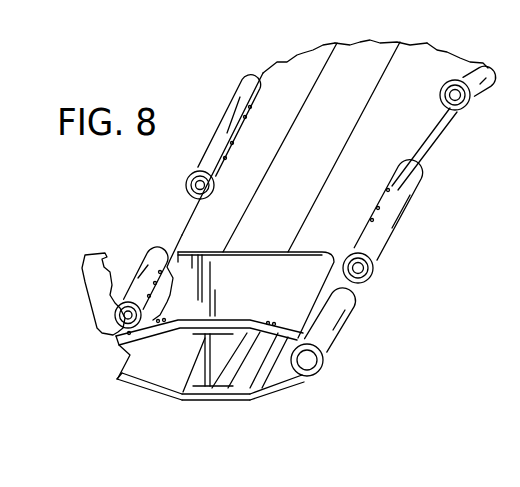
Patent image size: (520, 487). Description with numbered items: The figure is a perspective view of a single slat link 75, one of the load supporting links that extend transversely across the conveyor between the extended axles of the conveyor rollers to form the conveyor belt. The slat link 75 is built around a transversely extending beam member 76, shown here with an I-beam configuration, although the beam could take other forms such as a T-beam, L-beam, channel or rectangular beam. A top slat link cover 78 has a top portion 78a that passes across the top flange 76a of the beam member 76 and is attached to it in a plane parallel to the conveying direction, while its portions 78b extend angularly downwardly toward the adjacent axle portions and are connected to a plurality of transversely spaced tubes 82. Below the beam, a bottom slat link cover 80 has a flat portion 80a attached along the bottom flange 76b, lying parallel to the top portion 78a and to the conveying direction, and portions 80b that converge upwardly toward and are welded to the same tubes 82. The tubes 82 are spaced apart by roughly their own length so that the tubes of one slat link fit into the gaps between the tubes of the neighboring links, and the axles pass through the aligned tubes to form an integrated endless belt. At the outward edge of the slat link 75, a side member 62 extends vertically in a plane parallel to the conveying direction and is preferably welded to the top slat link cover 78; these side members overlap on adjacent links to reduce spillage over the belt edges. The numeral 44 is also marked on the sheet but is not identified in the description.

The top slat link cover 78 is at (320, 163).
The top portion 78a is at (363, 62).
The portions of the top slat link cover 78b is at (290, 72).
The tubes 82 is at (218, 136).
The side members 62 is at (262, 263).
The slat link 75 is at (410, 261).
The transversely extending beam member 76 is at (207, 366).
The top flange 76a is at (216, 316).
The bottom flange 76b is at (222, 396).
The bottom slat link cover 80 is at (211, 426).
The flat portion 80a is at (198, 401).
The portions of the bottom slat link cover 80b is at (138, 390).
The frame member 44 is at (506, 439).